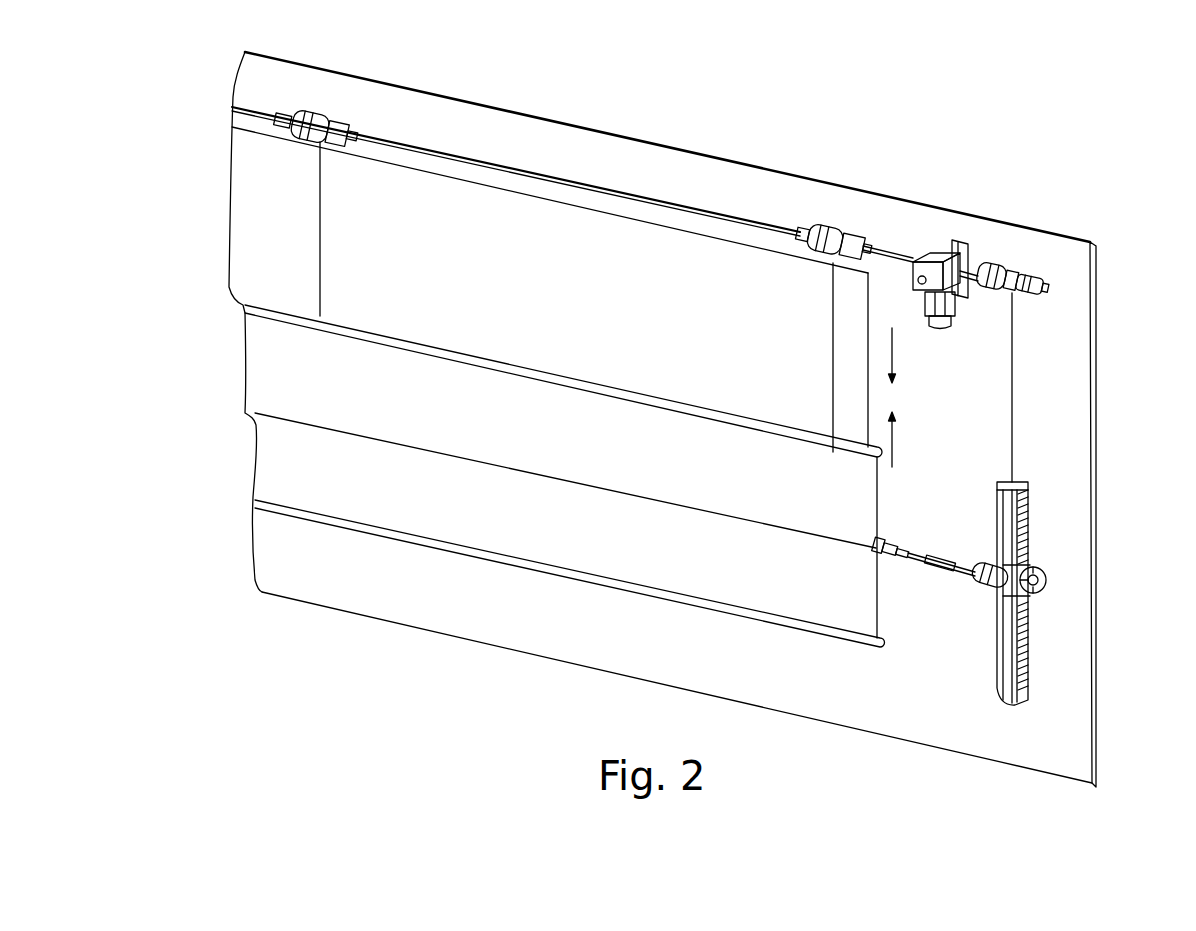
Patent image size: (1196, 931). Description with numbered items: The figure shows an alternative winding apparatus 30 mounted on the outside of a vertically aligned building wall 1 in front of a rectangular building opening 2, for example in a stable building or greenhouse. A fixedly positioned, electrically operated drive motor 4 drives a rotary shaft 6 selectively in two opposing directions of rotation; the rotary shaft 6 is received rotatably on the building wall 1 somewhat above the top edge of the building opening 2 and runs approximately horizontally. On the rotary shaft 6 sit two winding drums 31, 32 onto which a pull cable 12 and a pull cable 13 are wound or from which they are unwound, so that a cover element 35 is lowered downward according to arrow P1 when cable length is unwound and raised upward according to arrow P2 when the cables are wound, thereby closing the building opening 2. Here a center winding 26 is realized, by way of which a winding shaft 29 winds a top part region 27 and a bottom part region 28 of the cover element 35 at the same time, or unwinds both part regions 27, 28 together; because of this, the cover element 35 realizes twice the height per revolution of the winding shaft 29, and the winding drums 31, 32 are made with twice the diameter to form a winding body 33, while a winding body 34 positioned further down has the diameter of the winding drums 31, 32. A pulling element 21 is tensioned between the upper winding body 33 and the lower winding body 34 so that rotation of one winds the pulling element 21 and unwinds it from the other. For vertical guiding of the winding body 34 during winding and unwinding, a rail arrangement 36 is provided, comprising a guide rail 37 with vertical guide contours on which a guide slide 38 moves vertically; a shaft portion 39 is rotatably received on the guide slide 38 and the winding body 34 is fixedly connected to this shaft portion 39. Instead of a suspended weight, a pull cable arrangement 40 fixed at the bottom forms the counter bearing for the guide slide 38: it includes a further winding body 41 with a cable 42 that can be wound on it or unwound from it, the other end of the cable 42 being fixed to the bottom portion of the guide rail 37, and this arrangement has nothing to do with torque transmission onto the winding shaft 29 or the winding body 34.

The building wall 1 is at (1073, 315).
The building opening 2 is at (523, 276).
The drive motor 4 is at (949, 332).
The rotary shaft 6 is at (645, 195).
The pull cable 12 is at (830, 340).
The pull cable 13 is at (321, 257).
The pulling element 21 is at (1012, 357).
The center winding 26 is at (939, 525).
The top part region 27 is at (281, 363).
The bottom part region 28 is at (281, 462).
The winding shaft 29 is at (880, 533).
The winding apparatus 30 is at (1082, 161).
The winding drum 31 is at (801, 246).
The winding drum 32 is at (285, 138).
The winding body 33 is at (993, 270).
The winding body 34 is at (990, 567).
The cover element 35 is at (532, 412).
The rail arrangement 36 is at (1046, 549).
The guide rail 37 is at (1027, 479).
The guide slide 38 is at (1035, 598).
The shaft portion 39 is at (1048, 578).
The pull cable arrangement 40 is at (981, 639).
The further winding body 41 is at (997, 577).
The cable 42 is at (983, 657).
The arrow P1 is at (893, 352).
The arrow P2 is at (893, 437).